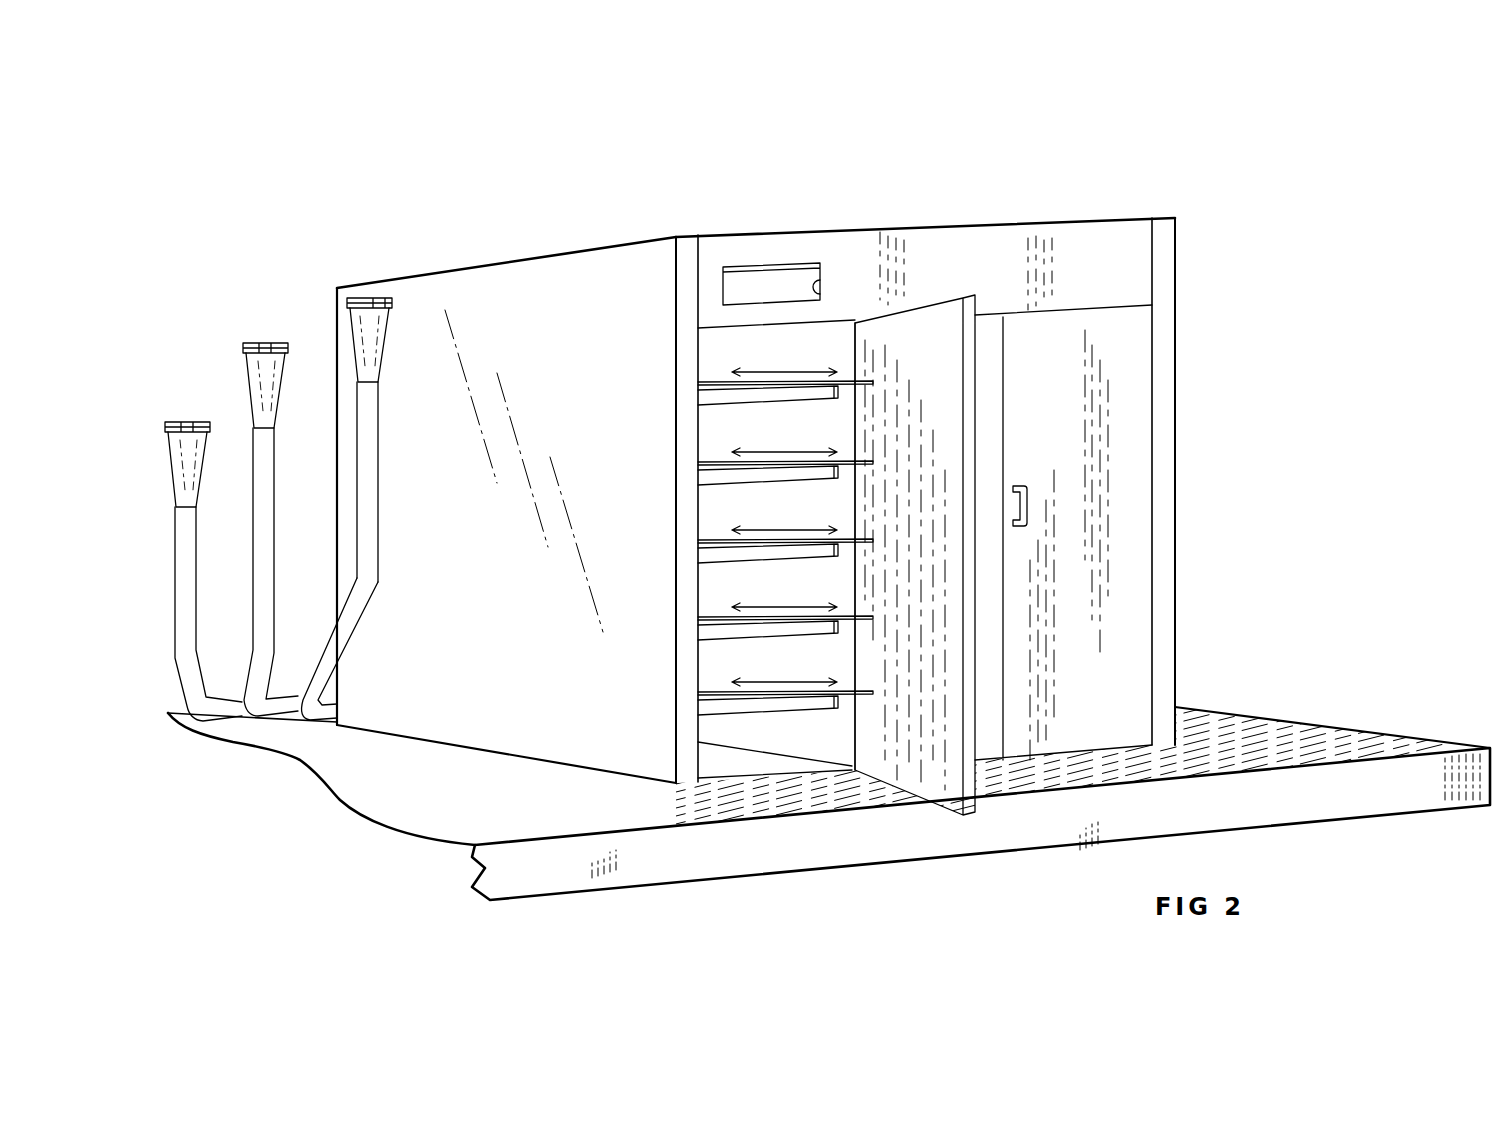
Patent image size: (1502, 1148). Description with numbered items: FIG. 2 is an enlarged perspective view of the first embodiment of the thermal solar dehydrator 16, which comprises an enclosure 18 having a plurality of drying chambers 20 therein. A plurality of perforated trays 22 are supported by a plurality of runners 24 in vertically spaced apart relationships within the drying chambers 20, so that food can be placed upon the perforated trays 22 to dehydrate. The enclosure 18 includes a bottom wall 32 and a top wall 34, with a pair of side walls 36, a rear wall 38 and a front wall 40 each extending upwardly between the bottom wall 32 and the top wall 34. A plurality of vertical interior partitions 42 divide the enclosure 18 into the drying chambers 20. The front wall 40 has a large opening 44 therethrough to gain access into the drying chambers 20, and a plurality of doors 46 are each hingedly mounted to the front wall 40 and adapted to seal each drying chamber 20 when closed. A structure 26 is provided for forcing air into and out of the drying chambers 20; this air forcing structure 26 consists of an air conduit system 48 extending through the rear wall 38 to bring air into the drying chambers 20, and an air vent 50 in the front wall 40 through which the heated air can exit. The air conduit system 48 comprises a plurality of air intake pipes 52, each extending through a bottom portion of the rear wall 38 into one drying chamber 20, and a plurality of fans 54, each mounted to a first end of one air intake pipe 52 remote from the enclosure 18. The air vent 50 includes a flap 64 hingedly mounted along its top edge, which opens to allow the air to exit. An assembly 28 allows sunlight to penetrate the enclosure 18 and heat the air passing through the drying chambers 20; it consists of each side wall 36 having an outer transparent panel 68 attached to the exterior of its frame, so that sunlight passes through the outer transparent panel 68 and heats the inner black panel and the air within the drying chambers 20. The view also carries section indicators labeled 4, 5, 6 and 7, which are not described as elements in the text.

The section line for FIG. 4 is at (690, 258).
The feed tube assembly 5 is at (315, 501).
The section line for FIG. 6 is at (882, 522).
The section line for FIG. 7 is at (530, 654).
The thermal solar dehydrator 16 is at (832, 552).
The enclosure 18 is at (752, 489).
The drying chambers 20 is at (748, 550).
The perforated trays 22 is at (712, 667).
The runners 24 is at (703, 475).
The structure for forcing air 26 is at (398, 567).
The assembly for allowing sunlight 28 is at (465, 286).
The bottom wall 32 is at (712, 760).
The top wall 34 is at (1085, 222).
The side walls 36 is at (396, 272).
The rear wall 38 is at (337, 303).
The front wall 40 is at (918, 248).
The vertical interior partitions 42 is at (720, 565).
The large opening 44 is at (1151, 432).
The doors 46 is at (1130, 568).
The air conduit system 48 is at (396, 516).
The air vent 50 is at (825, 290).
The air intake pipes 52 is at (260, 537).
The fans 54 is at (248, 378).
The flap 64 is at (804, 242).
The outer transparent panel 68 is at (563, 275).